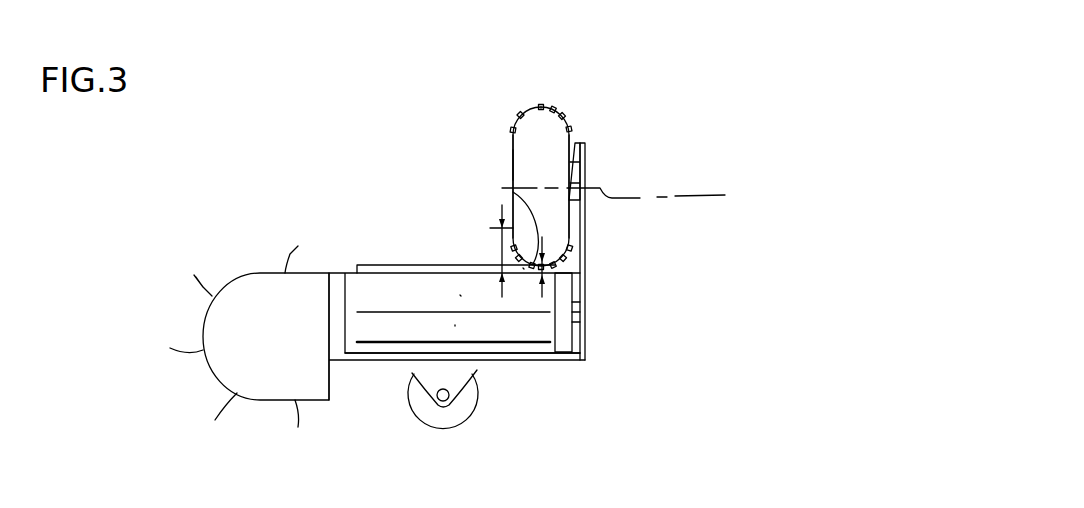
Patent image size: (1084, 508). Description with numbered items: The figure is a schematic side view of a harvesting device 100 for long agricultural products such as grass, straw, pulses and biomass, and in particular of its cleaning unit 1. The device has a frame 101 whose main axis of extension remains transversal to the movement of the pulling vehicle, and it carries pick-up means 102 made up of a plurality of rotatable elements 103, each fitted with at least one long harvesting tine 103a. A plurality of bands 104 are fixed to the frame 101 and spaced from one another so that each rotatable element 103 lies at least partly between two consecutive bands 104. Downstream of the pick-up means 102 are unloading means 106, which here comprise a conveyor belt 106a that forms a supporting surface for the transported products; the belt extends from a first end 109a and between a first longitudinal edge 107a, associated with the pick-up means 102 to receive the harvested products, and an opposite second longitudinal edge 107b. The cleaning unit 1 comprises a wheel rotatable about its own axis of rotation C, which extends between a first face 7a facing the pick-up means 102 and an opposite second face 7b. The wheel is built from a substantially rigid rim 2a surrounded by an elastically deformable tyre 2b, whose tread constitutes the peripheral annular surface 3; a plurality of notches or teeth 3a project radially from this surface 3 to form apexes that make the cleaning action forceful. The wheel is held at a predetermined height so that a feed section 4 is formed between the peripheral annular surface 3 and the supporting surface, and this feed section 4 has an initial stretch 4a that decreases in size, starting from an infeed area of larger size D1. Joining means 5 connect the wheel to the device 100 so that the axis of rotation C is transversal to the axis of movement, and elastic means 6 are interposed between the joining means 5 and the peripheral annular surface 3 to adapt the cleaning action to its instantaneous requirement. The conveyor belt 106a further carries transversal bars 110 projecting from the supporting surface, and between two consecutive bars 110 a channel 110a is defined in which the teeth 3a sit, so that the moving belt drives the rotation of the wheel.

The cleaning unit 1 is at (535, 91).
The rigid rim 2a is at (513, 148).
The elastically deformable tyre 2b is at (568, 122).
The peripheral annular surface 3 is at (558, 100).
The teeth 3a is at (527, 110).
The feed section 4 is at (523, 268).
The initial stretch 4a is at (460, 295).
The joining means 5 is at (577, 197).
The elastic means 6 is at (518, 204).
The first face 7a is at (513, 177).
The second face 7b is at (573, 162).
The harvesting device 100 is at (585, 97).
The frame 101 is at (582, 366).
The pick-up means 102 is at (187, 381).
The rotatable elements 103 is at (293, 427).
The harvesting tine 103a is at (290, 254).
The bands 104 is at (203, 325).
The unloading means 106 is at (368, 353).
The conveyor belt 106a is at (540, 342).
The first longitudinal edge 107a is at (328, 273).
The second longitudinal edge 107b is at (570, 288).
The first end 109a is at (412, 328).
The transversal bars 110 is at (447, 270).
The channel 110a is at (482, 270).
The axis of rotation C is at (622, 198).
The infeed area size D1 is at (520, 251).